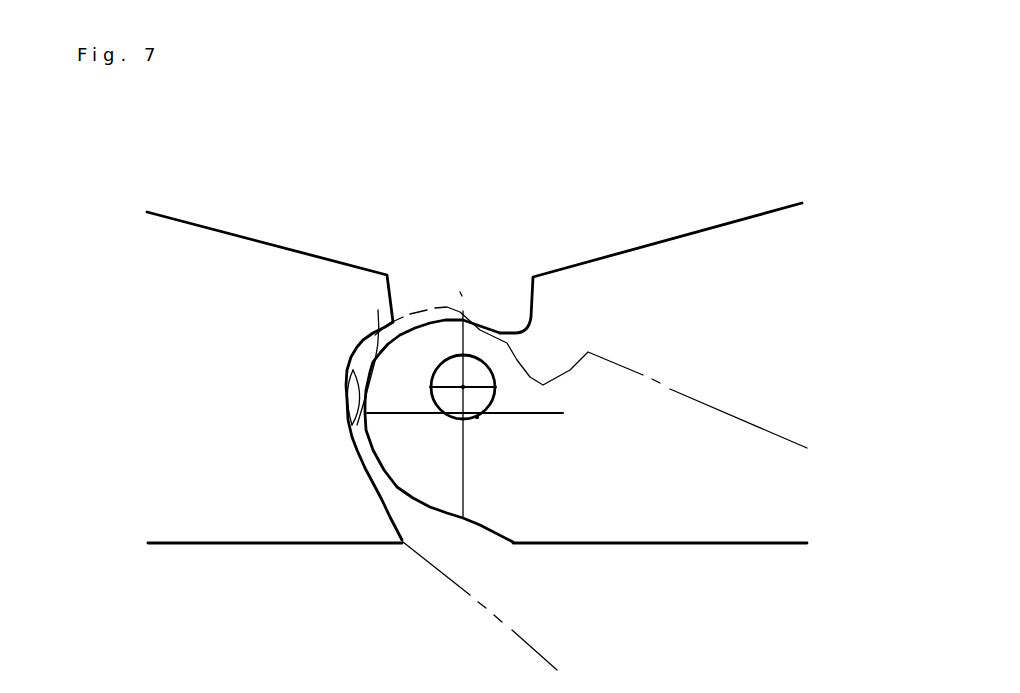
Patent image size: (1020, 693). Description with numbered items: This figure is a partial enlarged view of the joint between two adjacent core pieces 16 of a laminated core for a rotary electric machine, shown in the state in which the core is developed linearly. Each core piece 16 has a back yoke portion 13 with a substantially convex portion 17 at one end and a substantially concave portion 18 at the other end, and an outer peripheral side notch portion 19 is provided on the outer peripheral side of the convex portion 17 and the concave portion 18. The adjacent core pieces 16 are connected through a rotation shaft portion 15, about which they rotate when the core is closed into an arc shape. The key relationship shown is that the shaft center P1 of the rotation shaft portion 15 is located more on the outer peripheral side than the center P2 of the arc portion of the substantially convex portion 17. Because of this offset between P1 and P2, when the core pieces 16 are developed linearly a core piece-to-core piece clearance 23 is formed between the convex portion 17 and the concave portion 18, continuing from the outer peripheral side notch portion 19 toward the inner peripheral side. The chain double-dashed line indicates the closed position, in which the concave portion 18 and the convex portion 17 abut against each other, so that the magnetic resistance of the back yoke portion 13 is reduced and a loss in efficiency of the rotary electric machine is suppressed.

The back yoke portion 13 is at (190, 520).
The rotation shaft portion 15 is at (477, 372).
The core piece 16 is at (192, 220).
The substantially convex portion 17 is at (437, 453).
The substantially concave portion 18 is at (353, 370).
The outer peripheral side notch portion 19 is at (460, 292).
The core piece-to-core piece clearance 23 is at (378, 310).
The shaft center P1 is at (462, 385).
The center of the arc portion P2 is at (593, 510).